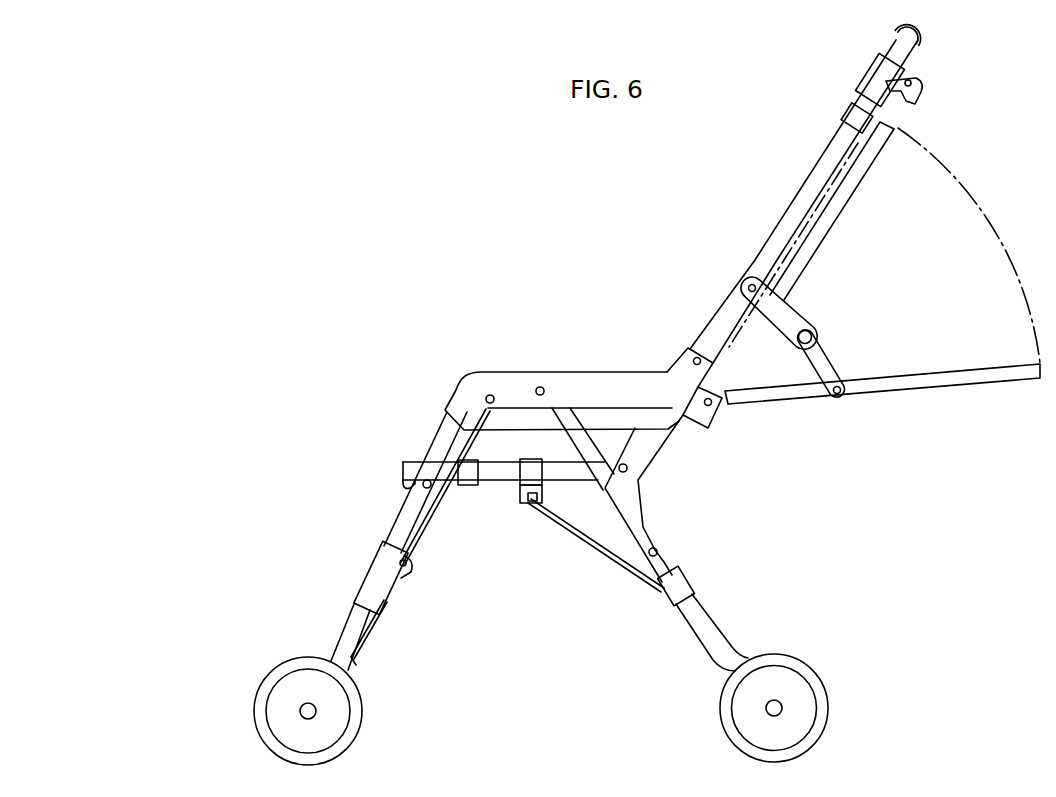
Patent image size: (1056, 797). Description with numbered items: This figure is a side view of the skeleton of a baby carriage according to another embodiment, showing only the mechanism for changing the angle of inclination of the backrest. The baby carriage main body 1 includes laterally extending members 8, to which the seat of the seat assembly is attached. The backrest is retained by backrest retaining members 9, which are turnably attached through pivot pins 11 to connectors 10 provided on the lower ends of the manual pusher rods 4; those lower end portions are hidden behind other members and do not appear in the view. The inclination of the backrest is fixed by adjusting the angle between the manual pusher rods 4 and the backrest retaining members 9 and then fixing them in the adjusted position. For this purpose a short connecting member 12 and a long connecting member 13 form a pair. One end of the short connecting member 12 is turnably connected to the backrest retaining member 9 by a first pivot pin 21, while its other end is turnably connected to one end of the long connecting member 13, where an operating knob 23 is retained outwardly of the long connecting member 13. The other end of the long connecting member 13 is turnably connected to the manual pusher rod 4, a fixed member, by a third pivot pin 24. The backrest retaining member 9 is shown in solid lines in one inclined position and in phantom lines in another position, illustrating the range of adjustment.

The baby carriage main body 1 is at (566, 342).
The manual pusher rod 4 is at (782, 222).
The laterally extending member 8 is at (496, 481).
The backrest retaining member 9 is at (833, 220).
The connector 10 is at (692, 420).
The pivot pin 11 is at (714, 408).
The short connecting member 12 is at (829, 361).
The long connecting member 13 is at (808, 306).
The first pivot pin 21 is at (838, 397).
The operating knob 23 is at (814, 331).
The third pivot pin 24 is at (748, 286).